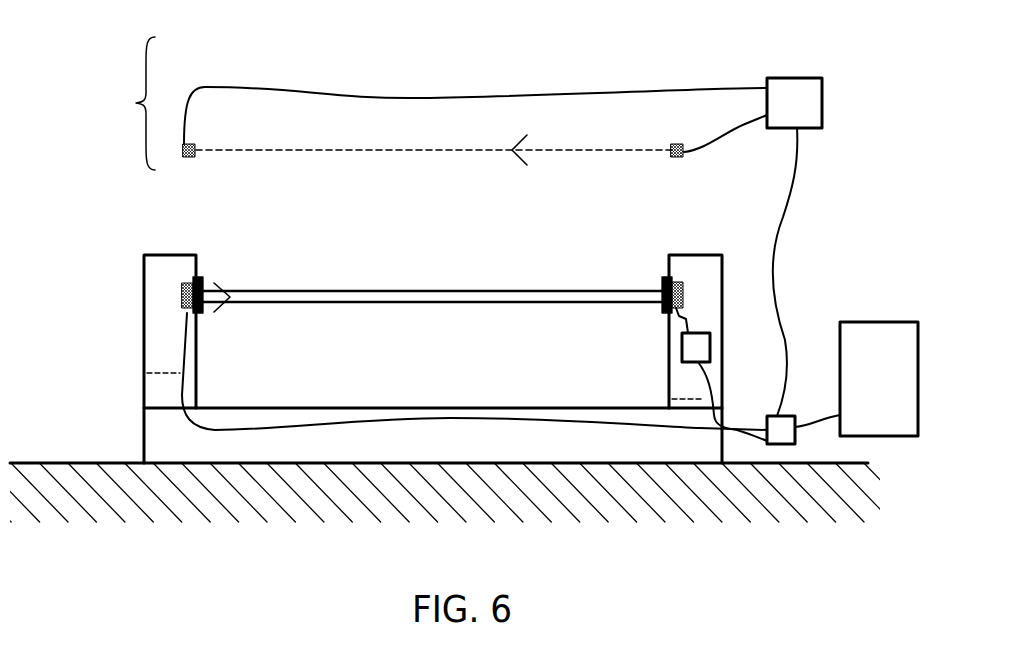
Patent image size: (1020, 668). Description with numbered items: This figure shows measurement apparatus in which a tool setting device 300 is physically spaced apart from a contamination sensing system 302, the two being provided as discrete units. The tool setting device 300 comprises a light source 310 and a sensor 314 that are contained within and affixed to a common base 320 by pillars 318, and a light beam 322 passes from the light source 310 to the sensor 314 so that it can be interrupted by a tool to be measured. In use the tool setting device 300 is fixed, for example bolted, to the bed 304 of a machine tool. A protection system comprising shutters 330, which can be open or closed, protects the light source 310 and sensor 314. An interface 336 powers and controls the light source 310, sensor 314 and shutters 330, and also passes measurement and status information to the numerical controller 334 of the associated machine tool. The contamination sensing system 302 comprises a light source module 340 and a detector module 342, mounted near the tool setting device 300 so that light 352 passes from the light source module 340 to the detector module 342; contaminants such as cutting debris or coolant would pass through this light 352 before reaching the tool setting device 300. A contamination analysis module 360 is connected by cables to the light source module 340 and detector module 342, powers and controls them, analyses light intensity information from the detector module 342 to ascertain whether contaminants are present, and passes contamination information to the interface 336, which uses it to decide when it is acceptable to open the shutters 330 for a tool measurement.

The tool setting device 300 is at (114, 240).
The contamination sensing system 302 is at (115, 103).
The bed 304 is at (487, 505).
The light source 310 is at (191, 280).
The sensor 314 is at (677, 278).
The pillars 318 is at (143, 362).
The common base 320 is at (487, 454).
The light beam 322 is at (367, 290).
The shutters 330 is at (203, 315).
The numerical controller 334 is at (903, 388).
The interface 336 is at (780, 436).
The light source module 340 is at (680, 142).
The detector module 342 is at (193, 142).
The light 352 is at (400, 145).
The contamination analysis module 360 is at (810, 107).